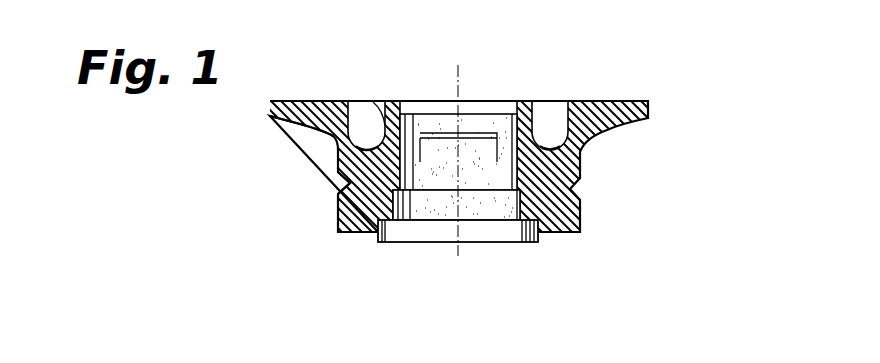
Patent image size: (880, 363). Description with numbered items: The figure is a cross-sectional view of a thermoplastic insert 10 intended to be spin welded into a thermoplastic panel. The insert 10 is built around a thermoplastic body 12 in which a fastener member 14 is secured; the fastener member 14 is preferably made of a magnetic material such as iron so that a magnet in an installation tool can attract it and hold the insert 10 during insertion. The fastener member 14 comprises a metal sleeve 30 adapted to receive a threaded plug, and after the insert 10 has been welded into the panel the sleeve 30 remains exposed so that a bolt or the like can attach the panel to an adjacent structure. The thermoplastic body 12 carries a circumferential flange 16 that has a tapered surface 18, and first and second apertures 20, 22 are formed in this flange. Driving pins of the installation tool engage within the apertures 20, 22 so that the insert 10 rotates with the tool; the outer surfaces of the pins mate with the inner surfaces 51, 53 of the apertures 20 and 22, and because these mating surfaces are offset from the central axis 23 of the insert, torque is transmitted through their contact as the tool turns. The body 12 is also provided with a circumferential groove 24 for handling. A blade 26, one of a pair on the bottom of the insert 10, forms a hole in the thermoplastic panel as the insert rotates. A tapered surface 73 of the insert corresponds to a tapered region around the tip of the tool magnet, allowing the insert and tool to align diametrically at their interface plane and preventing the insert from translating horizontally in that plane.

The thermoplastic insert 10 is at (625, 188).
The thermoplastic body 12 is at (342, 173).
The fastener member 14 is at (546, 151).
The circumferential flange 16 is at (312, 102).
The tapered surface 18 is at (298, 124).
The first aperture 20 is at (355, 101).
The second aperture 22 is at (561, 103).
The central axis 23 is at (458, 85).
The circumferential groove 24 is at (339, 193).
The blade 26 is at (407, 238).
The metal sleeve 30 is at (420, 152).
The inner surface of first aperture 51 is at (369, 148).
The inner surface of second aperture 53 is at (551, 150).
The tapered surface 73 is at (514, 104).